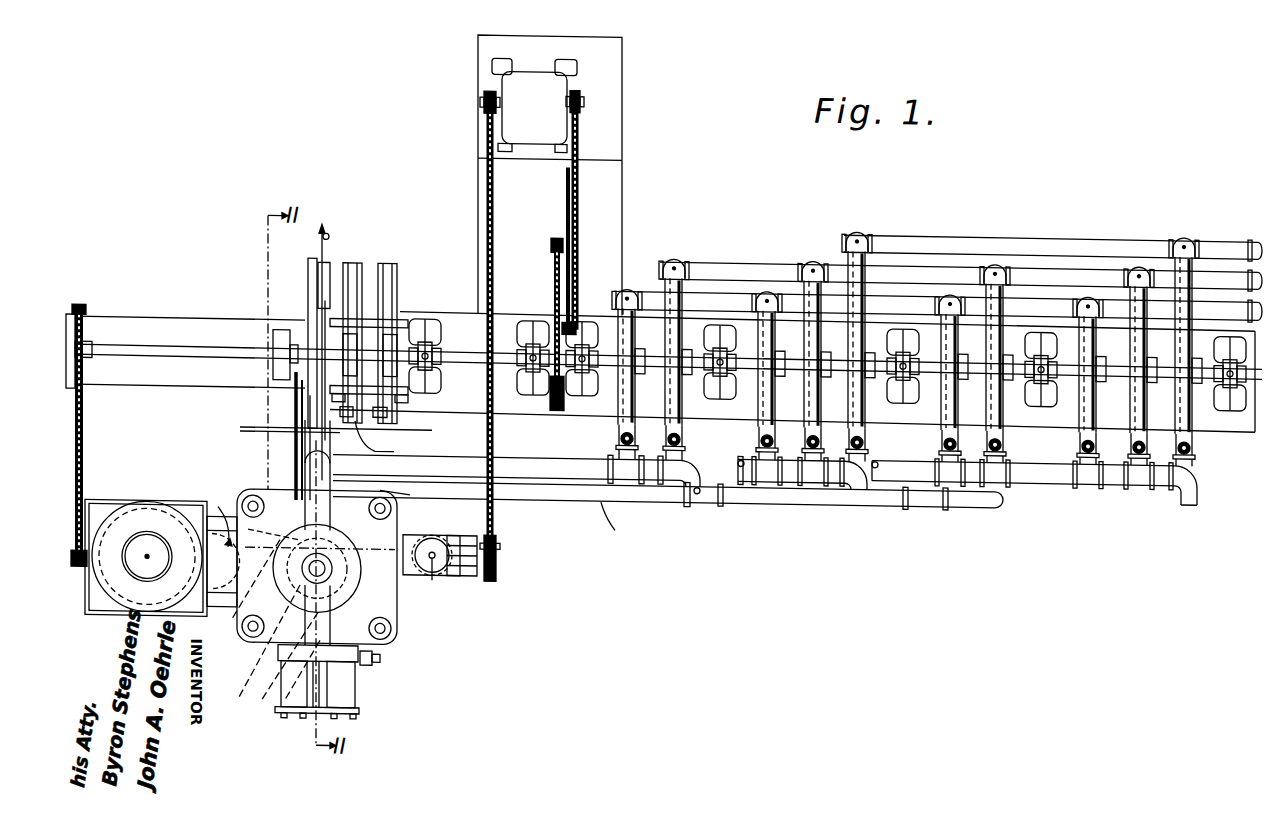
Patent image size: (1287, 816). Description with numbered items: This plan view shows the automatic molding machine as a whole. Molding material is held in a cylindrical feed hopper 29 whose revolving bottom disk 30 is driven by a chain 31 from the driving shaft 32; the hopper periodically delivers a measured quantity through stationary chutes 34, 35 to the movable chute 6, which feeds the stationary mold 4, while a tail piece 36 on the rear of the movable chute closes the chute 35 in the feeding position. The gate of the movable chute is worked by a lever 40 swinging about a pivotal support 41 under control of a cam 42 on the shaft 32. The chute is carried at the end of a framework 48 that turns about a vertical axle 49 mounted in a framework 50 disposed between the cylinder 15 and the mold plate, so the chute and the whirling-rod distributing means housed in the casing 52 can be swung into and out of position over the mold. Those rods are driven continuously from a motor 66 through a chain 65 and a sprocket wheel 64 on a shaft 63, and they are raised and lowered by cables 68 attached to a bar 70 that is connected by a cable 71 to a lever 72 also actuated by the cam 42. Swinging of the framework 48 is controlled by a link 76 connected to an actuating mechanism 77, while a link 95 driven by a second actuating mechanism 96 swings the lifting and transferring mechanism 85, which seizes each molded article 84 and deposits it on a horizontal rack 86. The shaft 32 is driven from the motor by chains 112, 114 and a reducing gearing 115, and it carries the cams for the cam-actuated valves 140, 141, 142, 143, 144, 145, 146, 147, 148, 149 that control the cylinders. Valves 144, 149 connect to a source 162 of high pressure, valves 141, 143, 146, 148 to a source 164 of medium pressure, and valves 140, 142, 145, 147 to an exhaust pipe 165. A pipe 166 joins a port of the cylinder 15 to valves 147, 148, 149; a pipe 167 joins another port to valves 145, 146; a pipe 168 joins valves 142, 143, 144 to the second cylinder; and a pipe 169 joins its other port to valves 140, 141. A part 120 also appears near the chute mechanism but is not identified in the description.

The stationary mold 4 is at (310, 615).
The movable chute 6 is at (262, 536).
The cylinder 15 is at (322, 636).
The feed hopper 29 is at (146, 518).
The revolving bottom disk 30 is at (226, 566).
The chain 31 is at (84, 430).
The driving shaft 32 is at (456, 357).
The stationary chute 34 is at (220, 505).
The stationary chute 35 is at (288, 586).
The tail piece 36 is at (300, 465).
The lever 40 is at (300, 440).
The pivotal support 41 is at (294, 426).
The cam 42 is at (318, 276).
The framework 48 is at (408, 533).
The vertical axle 49 is at (430, 576).
The framework 50 is at (462, 574).
The casing 52 is at (410, 495).
The shaft 63 is at (496, 560).
The sprocket wheel 64 is at (496, 546).
The chain 65 is at (486, 206).
The motor 66 is at (534, 105).
The cables 68 is at (350, 427).
The bar 70 is at (273, 379).
The cable 71 is at (313, 312).
The lever 72 is at (325, 225).
The link 76 is at (389, 441).
The actuating mechanism 77 is at (354, 264).
The molded article 84 is at (300, 600).
The lifting and transferring mechanism 85 is at (388, 630).
The horizontal rack 86 is at (345, 686).
The link 95 is at (384, 612).
The actuating mechanism 96 is at (398, 273).
The chain 112 is at (578, 133).
The chain 114 is at (560, 299).
The reducing gearing 115 is at (553, 232).
The bar 120 is at (311, 262).
The cam-actuated valve 140 is at (616, 437).
The cam-actuated valve 141 is at (684, 440).
The cam-actuated valve 142 is at (758, 441).
The cam-actuated valve 143 is at (811, 456).
The cam-actuated valve 144 is at (866, 438).
The cam-actuated valve 145 is at (940, 441).
The cam-actuated valve 146 is at (996, 438).
The cam-actuated valve 147 is at (1078, 441).
The cam-actuated valve 148 is at (1136, 458).
The cam-actuated valve 149 is at (1194, 439).
The source of high fluid pressure 162 is at (1104, 238).
The source of medium fluid pressure 164 is at (891, 267).
The exhaust pipe 165 is at (713, 298).
The pipe 166 is at (517, 460).
The pipe 167 is at (563, 497).
The pipe 168 is at (742, 486).
The pipe 169 is at (628, 523).